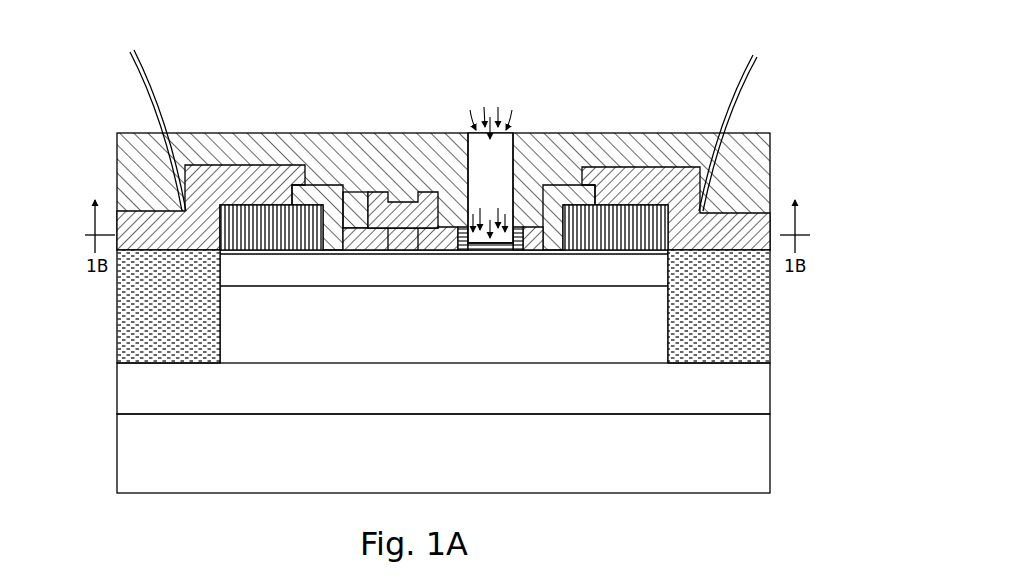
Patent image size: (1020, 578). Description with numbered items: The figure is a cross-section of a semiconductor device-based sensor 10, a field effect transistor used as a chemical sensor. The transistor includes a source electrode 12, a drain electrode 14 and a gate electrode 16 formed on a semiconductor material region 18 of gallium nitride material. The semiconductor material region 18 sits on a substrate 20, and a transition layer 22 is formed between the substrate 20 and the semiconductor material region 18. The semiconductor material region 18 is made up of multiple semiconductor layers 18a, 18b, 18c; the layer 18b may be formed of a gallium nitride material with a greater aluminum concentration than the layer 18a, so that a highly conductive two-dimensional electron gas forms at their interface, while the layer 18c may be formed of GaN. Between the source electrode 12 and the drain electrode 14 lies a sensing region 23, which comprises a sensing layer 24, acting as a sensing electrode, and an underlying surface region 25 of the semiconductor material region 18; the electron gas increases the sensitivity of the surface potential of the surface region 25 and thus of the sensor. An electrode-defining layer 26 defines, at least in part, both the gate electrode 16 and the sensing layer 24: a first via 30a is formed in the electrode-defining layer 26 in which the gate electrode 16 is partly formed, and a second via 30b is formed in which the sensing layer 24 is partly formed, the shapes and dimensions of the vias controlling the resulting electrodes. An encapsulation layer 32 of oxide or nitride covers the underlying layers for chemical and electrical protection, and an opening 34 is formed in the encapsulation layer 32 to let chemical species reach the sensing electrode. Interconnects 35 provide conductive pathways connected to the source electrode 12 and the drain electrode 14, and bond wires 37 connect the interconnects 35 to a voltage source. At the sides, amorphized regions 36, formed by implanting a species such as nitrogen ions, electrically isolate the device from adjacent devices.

The semiconductor device-based sensor 10 is at (578, 110).
The source electrode 12 is at (281, 228).
The drain electrode 14 is at (624, 228).
The gate electrode 16 is at (403, 210).
The semiconductor material region 18 is at (674, 308).
The semiconductor layer 18a is at (268, 326).
The semiconductor layer 18b is at (268, 276).
The semiconductor layer 18c is at (280, 254).
The substrate 20 is at (267, 458).
The transition layer 22 is at (267, 392).
The sensing region 23 is at (494, 252).
The sensing layer 24 is at (490, 240).
The surface region 25 is at (488, 247).
The electrode-defining layer 26 is at (367, 241).
The first via 30a is at (412, 242).
The second via 30b is at (462, 244).
The encapsulation layer 32 is at (355, 163).
The opening 34 is at (518, 145).
The interconnects 35 is at (247, 194).
The amorphized regions 36 is at (175, 313).
The bond wires 37 is at (142, 62).